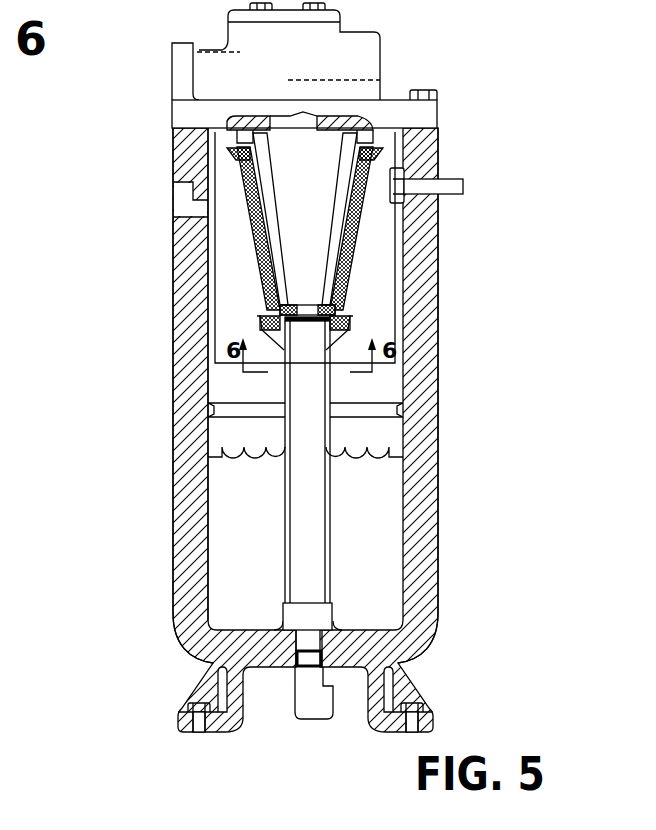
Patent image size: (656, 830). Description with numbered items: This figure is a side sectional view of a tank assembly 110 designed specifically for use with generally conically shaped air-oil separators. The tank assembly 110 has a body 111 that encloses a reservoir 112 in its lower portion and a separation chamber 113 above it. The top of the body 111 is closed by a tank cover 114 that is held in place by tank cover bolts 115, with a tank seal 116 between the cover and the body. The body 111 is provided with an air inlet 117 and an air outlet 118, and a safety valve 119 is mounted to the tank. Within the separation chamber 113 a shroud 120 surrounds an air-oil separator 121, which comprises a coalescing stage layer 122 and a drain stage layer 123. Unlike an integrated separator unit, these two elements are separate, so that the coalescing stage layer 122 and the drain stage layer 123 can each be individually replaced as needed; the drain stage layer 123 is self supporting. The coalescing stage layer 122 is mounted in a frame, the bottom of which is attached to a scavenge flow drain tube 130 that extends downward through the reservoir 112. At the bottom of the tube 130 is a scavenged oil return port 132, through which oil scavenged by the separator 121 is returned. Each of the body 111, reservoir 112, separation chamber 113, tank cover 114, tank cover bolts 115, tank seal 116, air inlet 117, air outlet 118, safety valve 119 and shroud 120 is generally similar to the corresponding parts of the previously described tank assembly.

The tank assembly 110 is at (158, 538).
The body 111 is at (425, 592).
The reservoir 112 is at (237, 513).
The separation chamber 113 is at (200, 297).
The tank cover 114 is at (367, 68).
The tank cover bolts 115 is at (433, 99).
The tank seal 116 is at (413, 129).
The air inlet 117 is at (192, 182).
The air outlet 118 is at (180, 74).
The safety valve 119 is at (447, 187).
The shroud 120 is at (217, 333).
The air-oil separator 121 is at (368, 210).
The coalescing stage layer 122 is at (357, 292).
The drain stage layer 123 is at (333, 257).
The scavenge flow drain tube 130 is at (322, 482).
The scavenged oil return port 132 is at (330, 702).